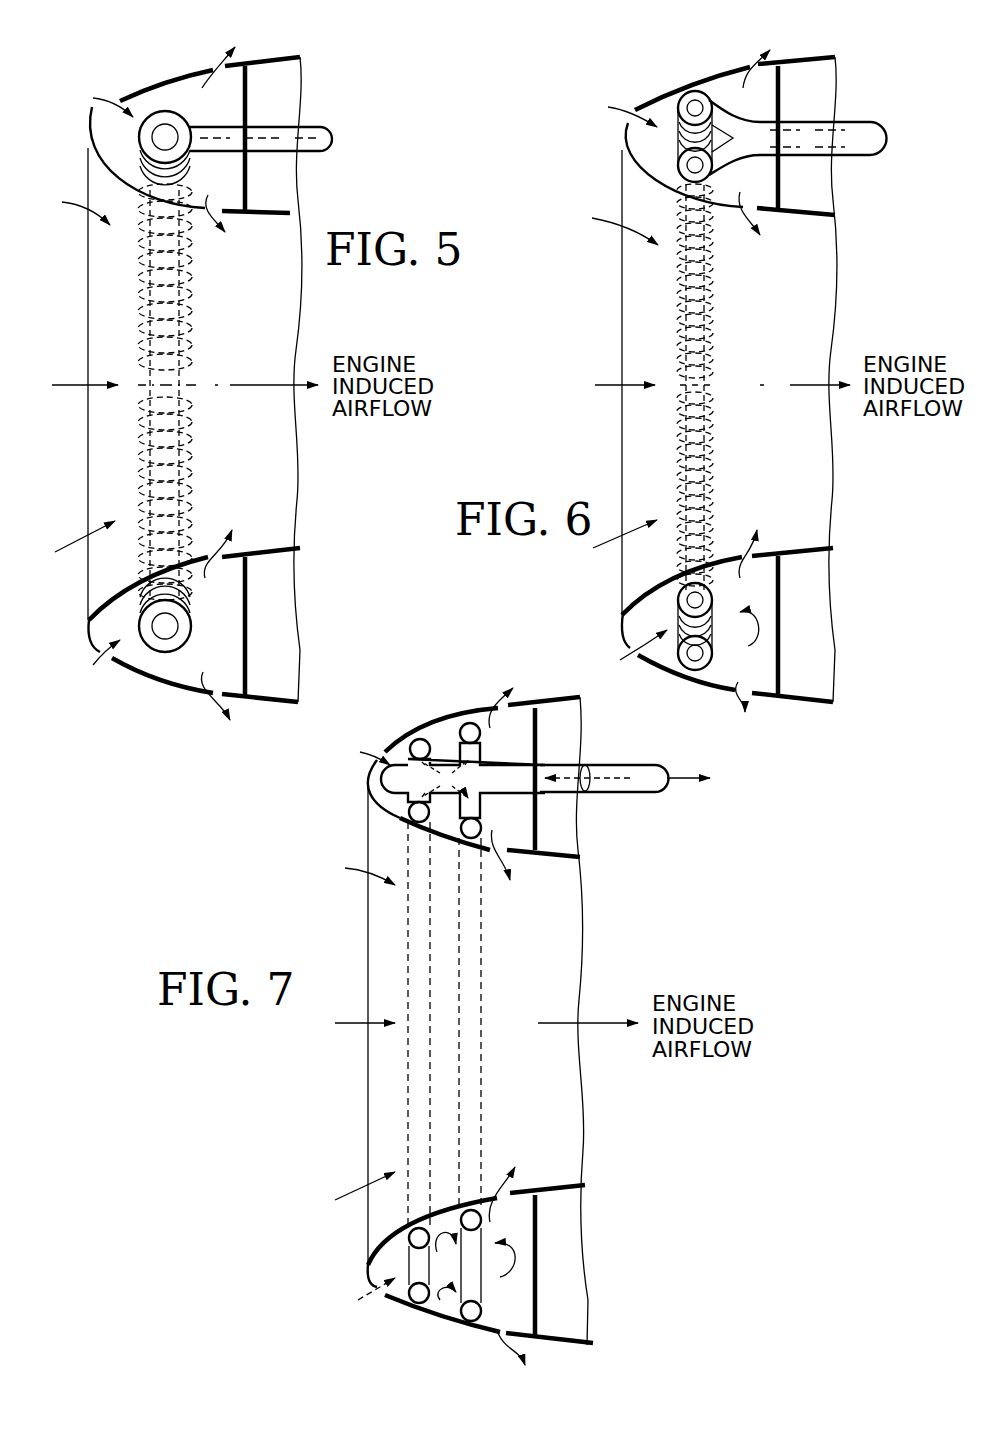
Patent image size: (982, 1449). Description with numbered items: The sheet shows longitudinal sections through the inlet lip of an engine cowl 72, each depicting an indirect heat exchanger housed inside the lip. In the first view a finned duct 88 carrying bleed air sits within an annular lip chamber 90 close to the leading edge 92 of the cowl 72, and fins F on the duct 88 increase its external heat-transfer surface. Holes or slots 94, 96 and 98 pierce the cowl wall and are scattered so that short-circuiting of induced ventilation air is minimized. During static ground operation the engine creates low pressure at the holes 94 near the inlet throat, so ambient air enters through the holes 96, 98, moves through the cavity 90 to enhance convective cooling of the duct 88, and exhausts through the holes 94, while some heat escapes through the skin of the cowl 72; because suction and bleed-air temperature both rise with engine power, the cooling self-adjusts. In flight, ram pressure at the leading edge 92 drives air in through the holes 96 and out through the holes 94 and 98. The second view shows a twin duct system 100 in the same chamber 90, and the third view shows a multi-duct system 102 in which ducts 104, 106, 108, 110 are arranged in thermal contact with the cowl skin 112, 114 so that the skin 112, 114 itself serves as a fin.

In FIG. 5, the cowl 72 is at (268, 705).
In FIG. 5, the finned duct 88 is at (178, 422).
In FIG. 5, the annular lip chamber 90 is at (180, 656).
In FIG. 6, the annular lip chamber 90 is at (722, 660).
In FIG. 7, the annular lip chamber 90 is at (428, 1305).
In FIG. 5, the leading edge 92 is at (92, 148).
In FIG. 6, the leading edge 92 is at (623, 140).
In FIG. 7, the leading edge 92 is at (368, 1265).
In FIG. 5, the holes or slots 94 is at (213, 386).
In FIG. 6, the holes or slots 94 is at (741, 385).
In FIG. 7, the holes or slots 94 is at (503, 1026).
In FIG. 5, the holes or slots 96 is at (113, 100).
In FIG. 6, the holes or slots 96 is at (633, 112).
In FIG. 7, the holes or slots 96 is at (383, 760).
In FIG. 5, the holes or slots 98 is at (213, 75).
In FIG. 6, the holes or slots 98 is at (750, 78).
In FIG. 7, the holes or slots 98 is at (495, 713).
In FIG. 6, the twin duct system 100 is at (670, 133).
In FIG. 7, the multi-duct system 102 is at (392, 803).
In FIG. 7, the duct 104 is at (415, 740).
In FIG. 7, the duct 106 is at (468, 722).
In FIG. 7, the duct 108 is at (412, 815).
In FIG. 7, the duct 110 is at (472, 840).
In FIG. 7, the cowl skin 112 is at (437, 728).
In FIG. 7, the cowl skin 114 is at (432, 845).
In FIG. 5, the fins F is at (165, 123).
In FIG. 6, the fins F is at (690, 100).